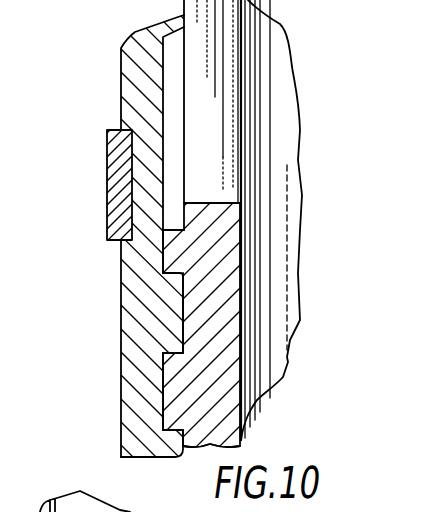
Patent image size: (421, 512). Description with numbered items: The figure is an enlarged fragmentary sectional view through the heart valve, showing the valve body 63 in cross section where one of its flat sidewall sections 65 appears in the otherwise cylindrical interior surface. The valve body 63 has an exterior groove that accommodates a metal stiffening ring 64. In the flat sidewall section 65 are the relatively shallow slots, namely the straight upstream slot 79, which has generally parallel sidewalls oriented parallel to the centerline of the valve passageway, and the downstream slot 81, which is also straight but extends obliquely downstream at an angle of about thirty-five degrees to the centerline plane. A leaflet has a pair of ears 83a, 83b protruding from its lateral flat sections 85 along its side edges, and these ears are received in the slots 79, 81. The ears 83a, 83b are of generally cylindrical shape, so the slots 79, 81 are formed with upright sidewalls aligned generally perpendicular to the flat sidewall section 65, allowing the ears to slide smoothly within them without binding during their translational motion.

The valve body 63 is at (122, 62).
The upstream slot 79 is at (175, 93).
The metal stiffening ring 64 is at (107, 177).
The ear 83a is at (162, 272).
The downstream slot 81 is at (162, 352).
The ear 83b is at (162, 430).
The lateral flat section 85 is at (192, 320).
The flat sidewall section 65 is at (198, 455).